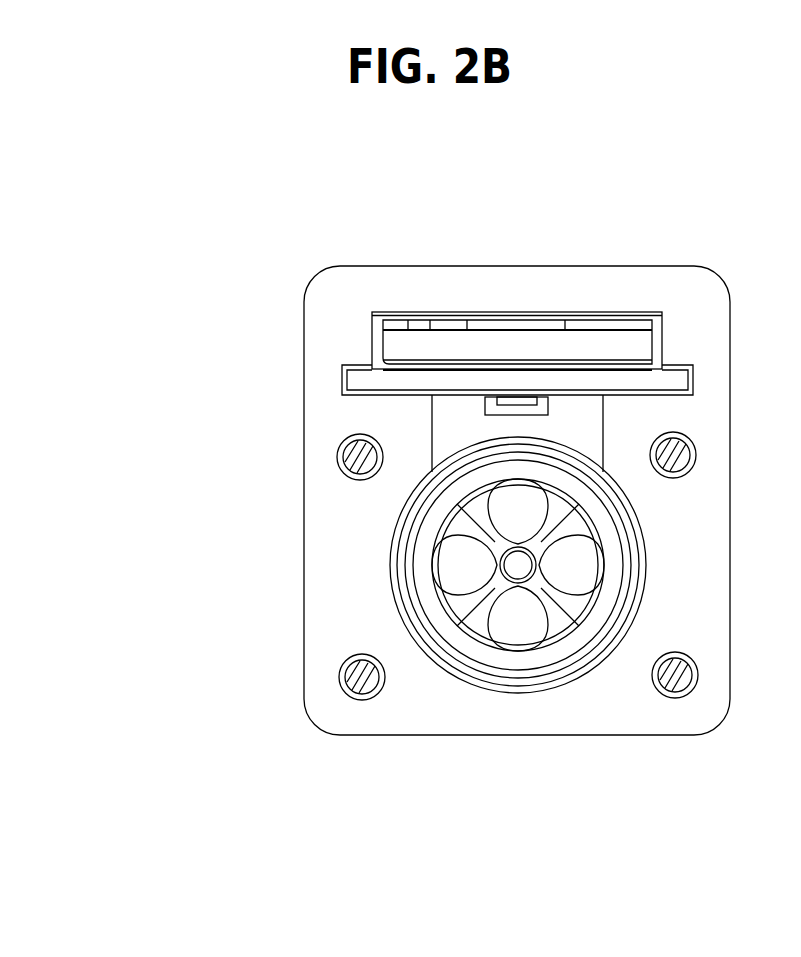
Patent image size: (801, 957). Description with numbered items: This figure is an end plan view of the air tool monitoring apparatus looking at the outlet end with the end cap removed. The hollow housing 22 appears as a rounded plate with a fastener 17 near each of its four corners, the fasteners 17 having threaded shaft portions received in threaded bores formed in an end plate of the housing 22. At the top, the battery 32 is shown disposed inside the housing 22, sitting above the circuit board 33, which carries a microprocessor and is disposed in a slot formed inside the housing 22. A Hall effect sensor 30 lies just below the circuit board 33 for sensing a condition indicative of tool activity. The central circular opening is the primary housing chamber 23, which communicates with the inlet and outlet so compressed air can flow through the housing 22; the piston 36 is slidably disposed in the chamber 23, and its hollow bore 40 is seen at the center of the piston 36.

The housing 22 is at (303, 577).
The fasteners 17 is at (340, 453).
The battery 32 is at (517, 340).
The circuit board 33 is at (683, 388).
The Hall effect sensor 30 is at (494, 398).
The piston 36 is at (633, 572).
The primary housing chamber 23 is at (490, 677).
The hollow bore 40 is at (560, 602).